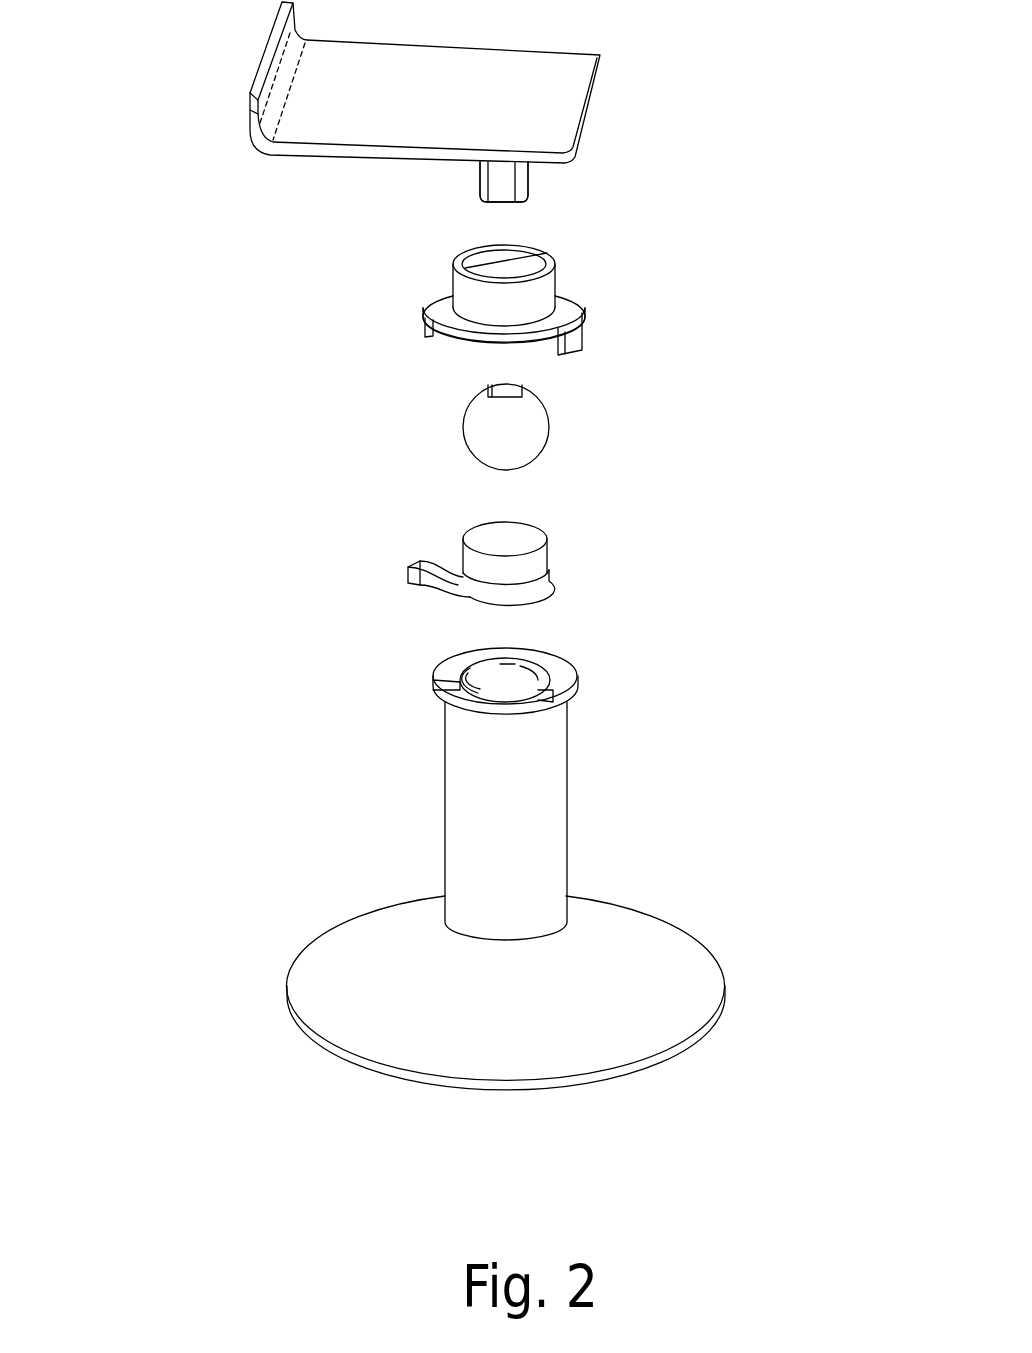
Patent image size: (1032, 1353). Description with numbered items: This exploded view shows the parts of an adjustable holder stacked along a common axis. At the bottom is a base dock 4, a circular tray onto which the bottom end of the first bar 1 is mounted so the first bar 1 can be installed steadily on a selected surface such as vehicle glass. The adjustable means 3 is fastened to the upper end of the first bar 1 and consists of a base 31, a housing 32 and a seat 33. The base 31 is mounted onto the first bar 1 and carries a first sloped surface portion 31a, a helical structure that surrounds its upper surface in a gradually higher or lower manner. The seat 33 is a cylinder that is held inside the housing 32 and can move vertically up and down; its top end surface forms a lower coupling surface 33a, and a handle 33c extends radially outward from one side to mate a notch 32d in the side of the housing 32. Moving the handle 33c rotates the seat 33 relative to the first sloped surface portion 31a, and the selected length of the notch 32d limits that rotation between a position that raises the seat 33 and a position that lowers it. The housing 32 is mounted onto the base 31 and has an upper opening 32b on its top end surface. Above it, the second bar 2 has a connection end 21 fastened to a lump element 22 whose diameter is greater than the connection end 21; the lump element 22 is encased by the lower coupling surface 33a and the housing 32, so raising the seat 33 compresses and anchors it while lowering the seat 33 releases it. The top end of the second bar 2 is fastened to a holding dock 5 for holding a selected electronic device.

The first bar 1 is at (567, 820).
The second bar 2 is at (533, 190).
The connection end 21 is at (515, 203).
The lump element 22 is at (530, 442).
The adjustable means 3 is at (188, 435).
The base 31 is at (386, 724).
The first sloped surface portion 31a is at (457, 695).
The housing 32 is at (363, 349).
The upper opening 32b is at (460, 263).
The notch 32d is at (423, 327).
The seat 33 is at (497, 589).
The lower coupling surface 33a is at (528, 537).
The handle 33c is at (430, 577).
The base dock 4 is at (728, 990).
The holding dock 5 is at (597, 57).